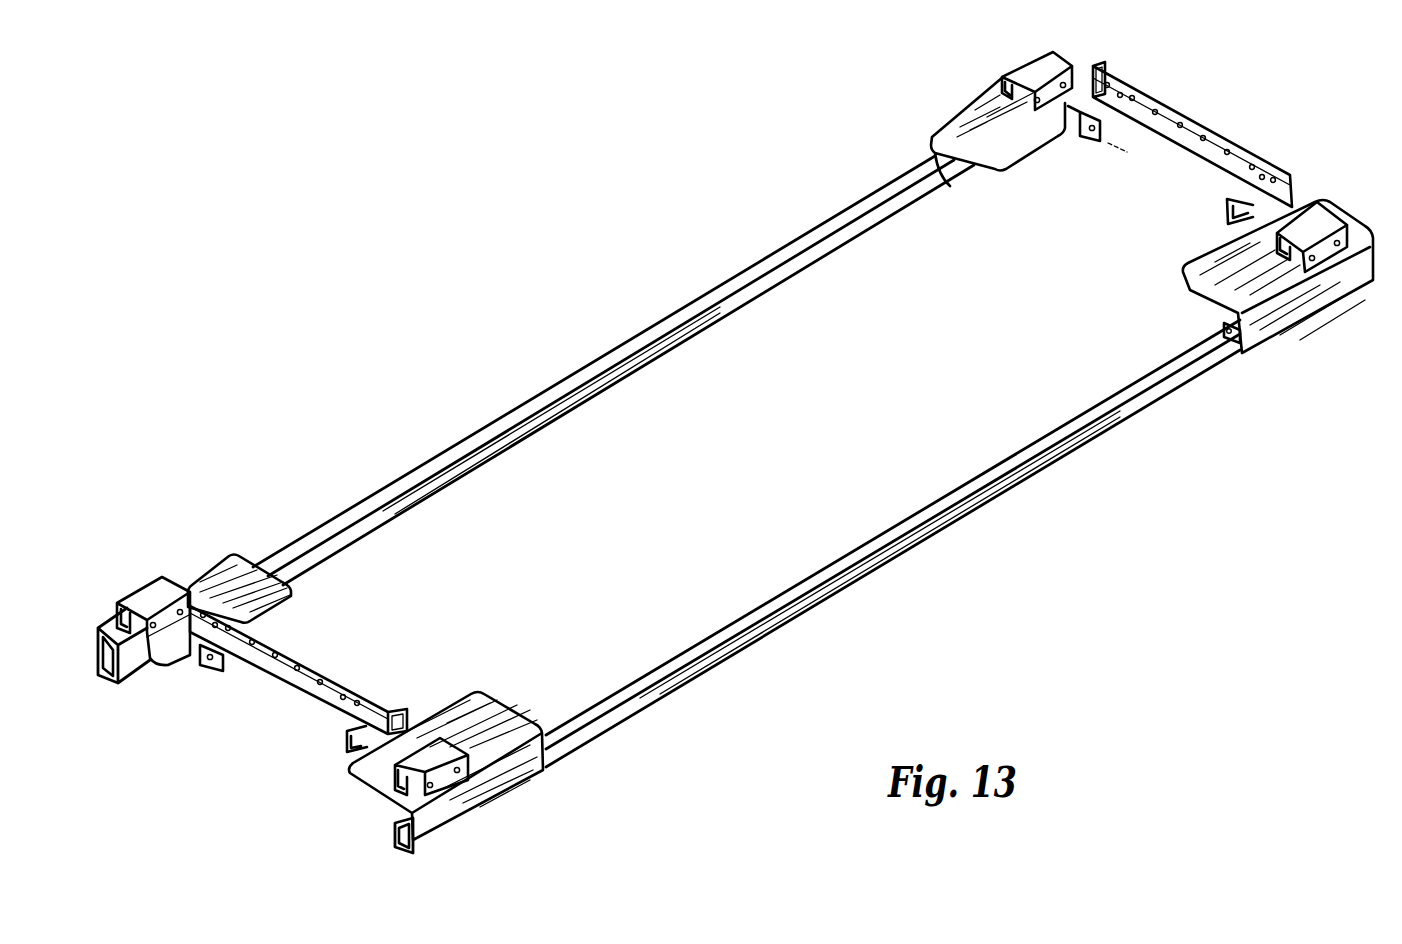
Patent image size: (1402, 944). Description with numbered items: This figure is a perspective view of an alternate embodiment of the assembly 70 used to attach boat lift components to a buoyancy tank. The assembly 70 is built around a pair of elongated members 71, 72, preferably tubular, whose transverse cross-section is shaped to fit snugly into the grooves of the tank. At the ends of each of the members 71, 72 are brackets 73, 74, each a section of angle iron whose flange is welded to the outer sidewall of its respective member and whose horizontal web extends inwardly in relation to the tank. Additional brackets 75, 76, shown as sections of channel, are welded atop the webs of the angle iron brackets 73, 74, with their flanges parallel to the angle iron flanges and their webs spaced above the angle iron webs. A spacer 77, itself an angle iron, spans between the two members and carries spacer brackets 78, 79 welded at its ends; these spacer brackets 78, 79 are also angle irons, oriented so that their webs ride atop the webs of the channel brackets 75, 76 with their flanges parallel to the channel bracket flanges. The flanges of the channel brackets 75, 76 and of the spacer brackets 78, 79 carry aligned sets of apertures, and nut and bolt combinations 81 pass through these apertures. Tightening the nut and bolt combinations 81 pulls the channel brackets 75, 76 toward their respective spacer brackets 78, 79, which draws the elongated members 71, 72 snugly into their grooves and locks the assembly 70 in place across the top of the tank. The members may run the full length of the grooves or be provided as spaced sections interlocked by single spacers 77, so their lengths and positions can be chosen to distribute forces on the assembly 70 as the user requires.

The assembly 70 is at (507, 365).
The elongated member 71 is at (643, 337).
The elongated member 72 is at (923, 540).
The bracket 73 is at (220, 565).
The bracket 74 is at (477, 807).
The elongated member channel bracket 75 is at (148, 597).
The elongated member channel bracket 76 is at (410, 783).
The spacer 77 is at (310, 683).
The spacer bracket 78 is at (222, 660).
The spacer bracket 79 is at (398, 720).
The nut and bolt combination 81 is at (175, 632).